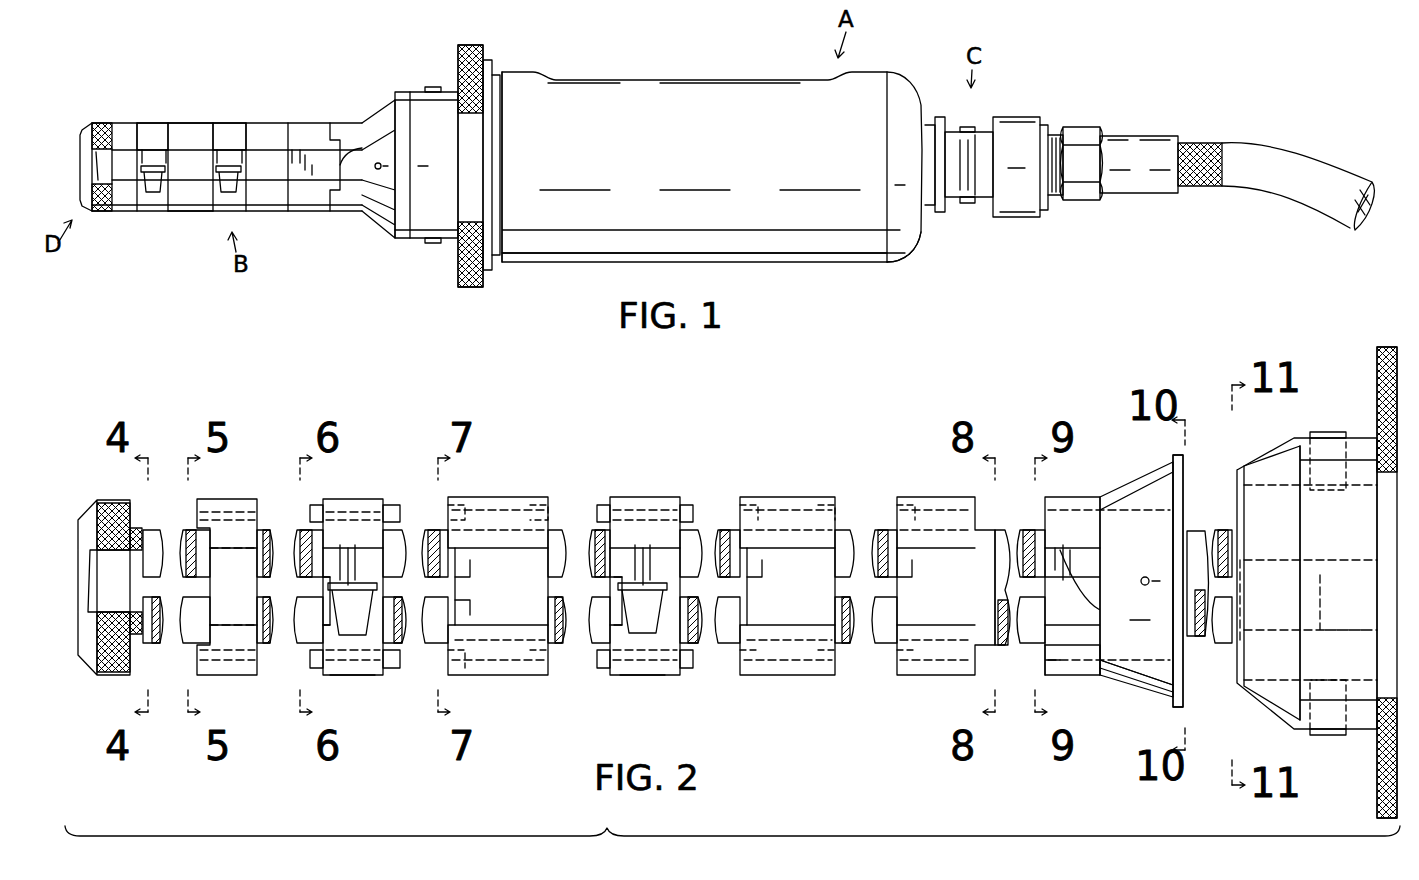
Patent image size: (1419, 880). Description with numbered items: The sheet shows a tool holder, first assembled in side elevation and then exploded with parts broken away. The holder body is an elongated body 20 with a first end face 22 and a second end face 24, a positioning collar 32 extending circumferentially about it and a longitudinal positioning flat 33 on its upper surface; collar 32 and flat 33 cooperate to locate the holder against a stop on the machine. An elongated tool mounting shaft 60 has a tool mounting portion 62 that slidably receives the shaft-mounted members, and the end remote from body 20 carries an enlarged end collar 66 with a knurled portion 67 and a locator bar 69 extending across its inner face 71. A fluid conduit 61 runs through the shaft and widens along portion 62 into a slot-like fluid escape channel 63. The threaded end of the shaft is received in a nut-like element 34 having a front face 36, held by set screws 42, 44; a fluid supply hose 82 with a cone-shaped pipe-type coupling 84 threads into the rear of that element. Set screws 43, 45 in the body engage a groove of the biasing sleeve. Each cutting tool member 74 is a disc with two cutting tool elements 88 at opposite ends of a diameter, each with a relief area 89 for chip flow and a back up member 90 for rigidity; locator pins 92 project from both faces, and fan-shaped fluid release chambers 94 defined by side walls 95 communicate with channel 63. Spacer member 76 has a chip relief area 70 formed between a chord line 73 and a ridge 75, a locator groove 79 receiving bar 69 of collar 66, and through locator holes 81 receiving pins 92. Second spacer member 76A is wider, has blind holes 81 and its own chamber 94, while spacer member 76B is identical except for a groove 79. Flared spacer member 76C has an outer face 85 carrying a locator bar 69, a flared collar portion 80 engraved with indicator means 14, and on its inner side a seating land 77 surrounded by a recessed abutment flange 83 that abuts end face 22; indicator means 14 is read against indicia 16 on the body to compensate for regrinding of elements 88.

In FIG. 1, the indicator means 14 is at (380, 172).
In FIG. 2, the indicator means 14 is at (1150, 576).
In FIG. 1, the indicia 16 is at (400, 238).
In FIG. 2, the indicia 16 is at (1270, 615).
In FIG. 1, the elongated body 20 is at (803, 255).
In FIG. 2, the first end face 22 is at (1238, 470).
In FIG. 1, the second end face 24 is at (920, 238).
In FIG. 1, the positioning collar 32 is at (470, 45).
In FIG. 2, the positioning collar 32 is at (1380, 348).
In FIG. 1, the positioning flat 33 is at (660, 85).
In FIG. 1, the nut-like element 34 is at (1028, 100).
In FIG. 1, the front face 36 is at (940, 116).
In FIG. 1, the set screw 42 is at (966, 126).
In FIG. 1, the set screw 43 is at (432, 86).
In FIG. 2, the set screw 43 is at (1330, 430).
In FIG. 1, the set screw 44 is at (968, 205).
In FIG. 1, the set screw 45 is at (434, 244).
In FIG. 2, the set screw 45 is at (1330, 736).
In FIG. 2, the tool mounting shaft 60 is at (573, 660).
In FIG. 2, the fluid conduit 61 is at (1198, 530).
In FIG. 2, the tool mounting portion 62 is at (152, 530).
In FIG. 2, the fluid escape channel 63 is at (315, 580).
In FIG. 1, the end collar 66 is at (82, 132).
In FIG. 2, the end collar 66 is at (82, 640).
In FIG. 1, the knurled portion 67 is at (100, 123).
In FIG. 2, the knurled portion 67 is at (105, 503).
In FIG. 1, the locator bar 69 is at (108, 150).
In FIG. 2, the locator bar 69 is at (150, 645).
In FIG. 2, the chip relief area 70 is at (220, 560).
In FIG. 2, the inner face 71 is at (130, 672).
In FIG. 2, the chord line 73 is at (245, 548).
In FIG. 1, the cutting tool member 74 is at (230, 110).
In FIG. 2, the cutting tool member 74 is at (370, 686).
In FIG. 2, the ridge 75 is at (248, 625).
In FIG. 1, the spacer member 76 is at (112, 212).
In FIG. 2, the spacer member 76 is at (241, 493).
In FIG. 1, the second spacer member 76A is at (262, 122).
In FIG. 2, the second spacer member 76A is at (549, 486).
In FIG. 1, the spacer member 76B is at (312, 213).
In FIG. 2, the spacer member 76B is at (939, 690).
In FIG. 1, the flared spacer member 76C is at (362, 118).
In FIG. 2, the flared spacer member 76C is at (1116, 456).
In FIG. 2, the seating land 77 is at (1183, 680).
In FIG. 2, the locator groove 79 is at (210, 645).
In FIG. 2, the flared collar portion 80 is at (1140, 686).
In FIG. 2, the locator hole 81 is at (248, 495).
In FIG. 1, the fluid supply hose 82 is at (1288, 160).
In FIG. 2, the recessed abutment flange 83 is at (1182, 470).
In FIG. 1, the pipe-type coupling 84 is at (1130, 148).
In FIG. 2, the outer face 85 is at (1055, 672).
In FIG. 1, the cutting tool element 88 is at (150, 193).
In FIG. 2, the cutting tool element 88 is at (345, 580).
In FIG. 2, the relief area 89 is at (670, 560).
In FIG. 2, the back up member 90 is at (352, 636).
In FIG. 2, the locator pin 92 is at (395, 505).
In FIG. 1, the fluid release chamber 94 is at (142, 162).
In FIG. 2, the fluid release chamber 94 is at (458, 578).
In FIG. 2, the side wall 95 is at (325, 600).